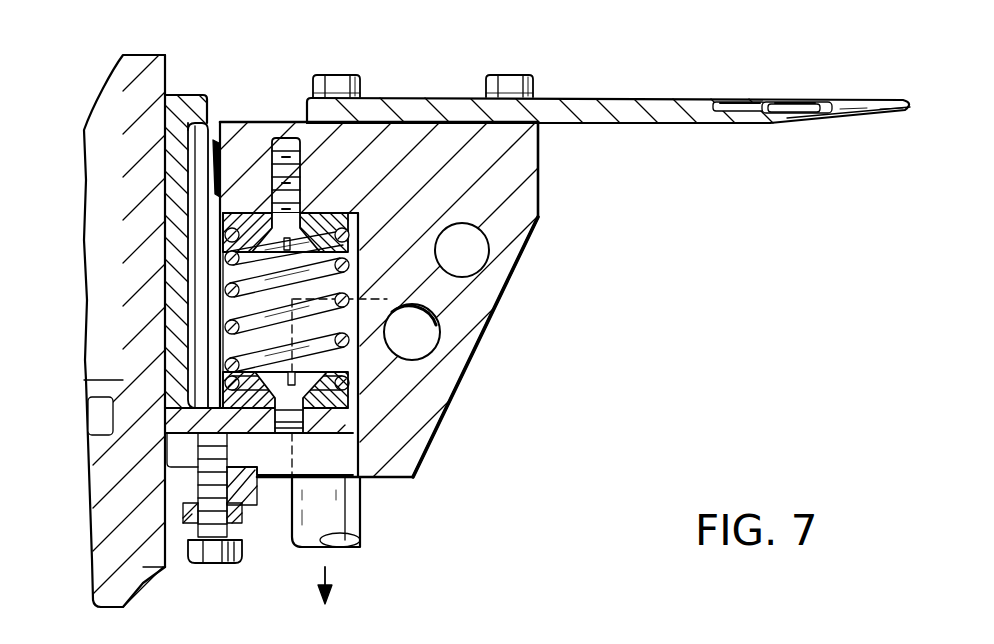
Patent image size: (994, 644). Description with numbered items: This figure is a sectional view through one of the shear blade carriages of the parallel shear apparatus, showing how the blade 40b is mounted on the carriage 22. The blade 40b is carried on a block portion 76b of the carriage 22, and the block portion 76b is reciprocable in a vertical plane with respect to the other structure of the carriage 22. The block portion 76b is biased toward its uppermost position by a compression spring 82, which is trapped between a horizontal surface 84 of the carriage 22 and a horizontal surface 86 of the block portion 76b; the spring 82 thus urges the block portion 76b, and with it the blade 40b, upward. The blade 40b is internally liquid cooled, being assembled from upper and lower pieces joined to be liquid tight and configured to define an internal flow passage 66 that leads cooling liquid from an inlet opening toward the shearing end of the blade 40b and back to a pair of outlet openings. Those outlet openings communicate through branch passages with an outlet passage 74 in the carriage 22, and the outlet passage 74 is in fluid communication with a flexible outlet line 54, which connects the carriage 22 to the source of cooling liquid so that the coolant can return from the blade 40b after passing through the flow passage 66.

The shear blade carriage 22 is at (186, 93).
The horizontal surface of the block portion 86 is at (241, 182).
The blade 40b is at (608, 97).
The internal flow passage 66 is at (782, 100).
The block portion 76b is at (503, 260).
The outlet passage 74 is at (436, 333).
The compression spring 82 is at (355, 337).
The horizontal surface of the carriage 84 is at (352, 408).
The outlet line 54 is at (360, 508).